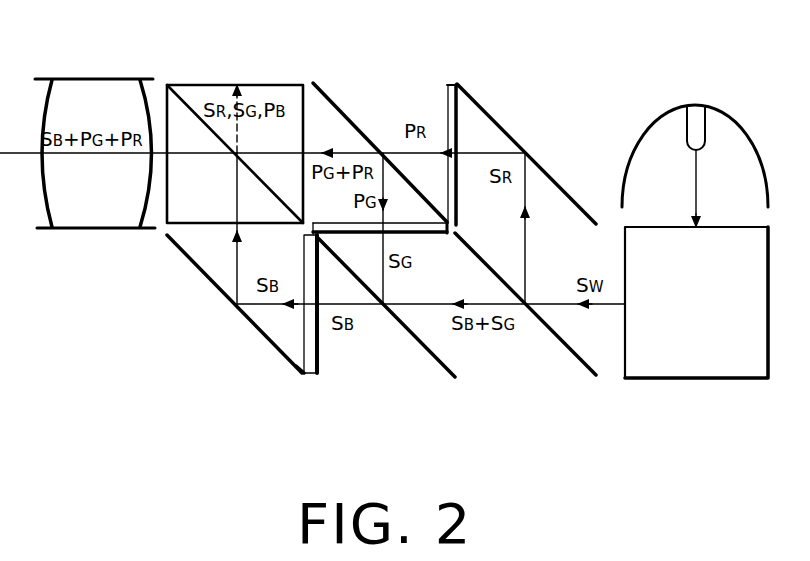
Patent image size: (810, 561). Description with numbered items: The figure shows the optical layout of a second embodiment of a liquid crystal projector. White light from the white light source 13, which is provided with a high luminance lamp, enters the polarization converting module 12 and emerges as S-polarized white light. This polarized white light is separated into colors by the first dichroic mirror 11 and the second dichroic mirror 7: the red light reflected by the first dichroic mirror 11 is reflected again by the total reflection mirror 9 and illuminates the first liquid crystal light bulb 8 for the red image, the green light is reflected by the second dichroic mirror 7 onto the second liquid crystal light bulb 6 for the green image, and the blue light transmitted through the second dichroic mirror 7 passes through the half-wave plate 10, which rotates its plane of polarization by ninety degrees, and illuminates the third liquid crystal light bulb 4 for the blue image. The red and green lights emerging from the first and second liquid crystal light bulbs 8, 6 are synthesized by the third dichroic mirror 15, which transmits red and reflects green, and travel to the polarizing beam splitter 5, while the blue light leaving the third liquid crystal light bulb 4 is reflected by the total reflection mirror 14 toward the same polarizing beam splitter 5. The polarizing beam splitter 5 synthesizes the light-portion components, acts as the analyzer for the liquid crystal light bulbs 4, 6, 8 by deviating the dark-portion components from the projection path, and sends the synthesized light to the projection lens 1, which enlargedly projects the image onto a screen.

The projection lens 1 is at (72, 221).
The third liquid crystal light bulb 4 is at (300, 350).
The polarizing beam splitter 5 is at (182, 91).
The second liquid crystal light bulb 6 is at (427, 236).
The second dichroic mirror 7 is at (447, 367).
The first liquid crystal light bulb 8 is at (447, 92).
The total reflection mirror 9 is at (508, 130).
The λ/2 plate 10 is at (322, 362).
The first dichroic mirror 11 is at (582, 365).
The polarization converting module 12 is at (732, 379).
The white light source 13 is at (747, 138).
The total reflection mirror 14 is at (182, 256).
The third dichroic mirror 15 is at (331, 97).